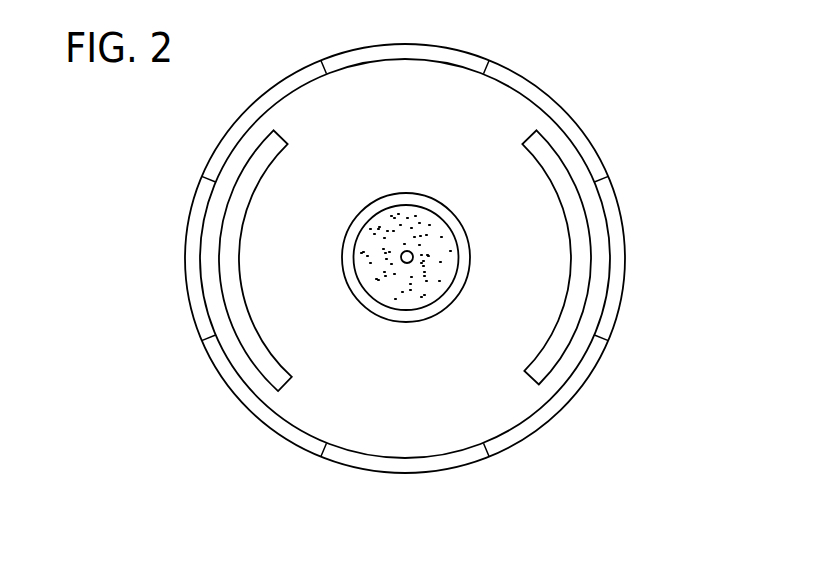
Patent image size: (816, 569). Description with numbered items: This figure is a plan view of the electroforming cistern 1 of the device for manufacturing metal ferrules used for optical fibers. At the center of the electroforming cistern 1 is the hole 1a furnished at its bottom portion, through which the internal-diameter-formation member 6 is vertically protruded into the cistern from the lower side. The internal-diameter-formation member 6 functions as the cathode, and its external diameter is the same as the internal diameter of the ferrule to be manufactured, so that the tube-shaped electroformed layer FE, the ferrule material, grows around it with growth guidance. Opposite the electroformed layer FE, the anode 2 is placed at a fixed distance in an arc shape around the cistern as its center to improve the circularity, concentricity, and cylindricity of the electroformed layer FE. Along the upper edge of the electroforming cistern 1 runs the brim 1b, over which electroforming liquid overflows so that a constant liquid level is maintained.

The electroforming cistern 1 is at (625, 363).
The hole 1a is at (351, 242).
The brim 1b is at (447, 56).
The anode 2 is at (260, 339).
The internal-diameter-formation member 6 is at (407, 251).
The electroformed layer FE is at (420, 294).